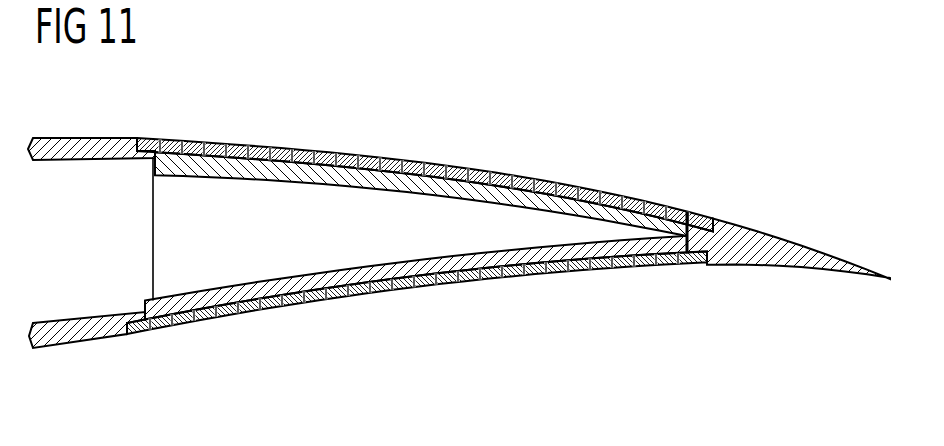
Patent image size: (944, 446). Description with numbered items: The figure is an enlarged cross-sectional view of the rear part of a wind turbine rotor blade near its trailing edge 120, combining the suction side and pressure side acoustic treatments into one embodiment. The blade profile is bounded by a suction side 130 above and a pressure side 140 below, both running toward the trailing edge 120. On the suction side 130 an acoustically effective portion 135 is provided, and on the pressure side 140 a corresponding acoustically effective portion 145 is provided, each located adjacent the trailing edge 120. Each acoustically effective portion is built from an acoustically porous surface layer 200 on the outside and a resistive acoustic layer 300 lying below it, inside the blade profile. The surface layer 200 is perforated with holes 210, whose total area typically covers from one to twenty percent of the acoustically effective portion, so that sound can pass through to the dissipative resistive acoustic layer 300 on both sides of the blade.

The trailing edge 120 is at (764, 238).
The suction side 130 is at (97, 137).
The acoustically effective portion 135 is at (674, 63).
The pressure side 140 is at (68, 343).
The acoustically effective portion 145 is at (677, 361).
The acoustically porous surface layer 200 is at (342, 151).
The holes 210 is at (448, 166).
The resistive acoustic layer 300 is at (265, 281).